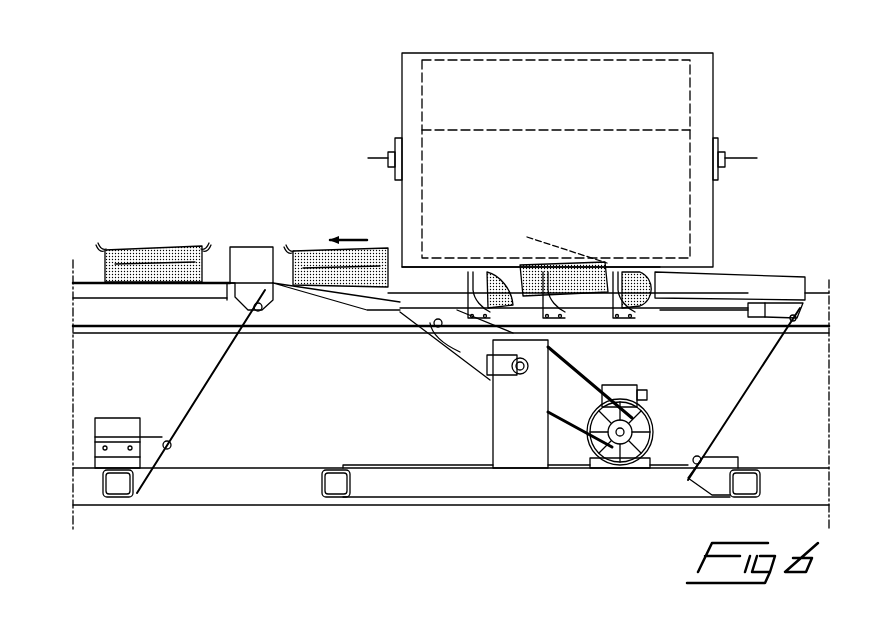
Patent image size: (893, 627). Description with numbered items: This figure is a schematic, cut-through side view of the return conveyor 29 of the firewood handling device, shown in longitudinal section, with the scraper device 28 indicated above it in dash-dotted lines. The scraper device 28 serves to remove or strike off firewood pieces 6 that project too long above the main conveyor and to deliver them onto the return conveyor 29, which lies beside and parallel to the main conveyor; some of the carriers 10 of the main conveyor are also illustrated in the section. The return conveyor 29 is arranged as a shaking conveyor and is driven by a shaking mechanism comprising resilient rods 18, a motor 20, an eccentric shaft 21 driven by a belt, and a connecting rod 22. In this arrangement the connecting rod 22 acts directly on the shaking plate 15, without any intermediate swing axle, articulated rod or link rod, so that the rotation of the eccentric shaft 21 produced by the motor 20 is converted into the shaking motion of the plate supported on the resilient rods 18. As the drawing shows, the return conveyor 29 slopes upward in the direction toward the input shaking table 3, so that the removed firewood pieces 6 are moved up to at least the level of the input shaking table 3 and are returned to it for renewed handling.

The input shaking table 3 is at (82, 241).
The firewood pieces 6 is at (312, 250).
The carriers 10 is at (547, 290).
The shaking plate 15 is at (670, 312).
The resilient rods 18 is at (764, 362).
The motor 20 is at (655, 447).
The eccentric shaft 21 is at (520, 374).
The connecting rod 22 is at (462, 350).
The scraper device 28 is at (372, 107).
The return conveyor 29 is at (740, 264).